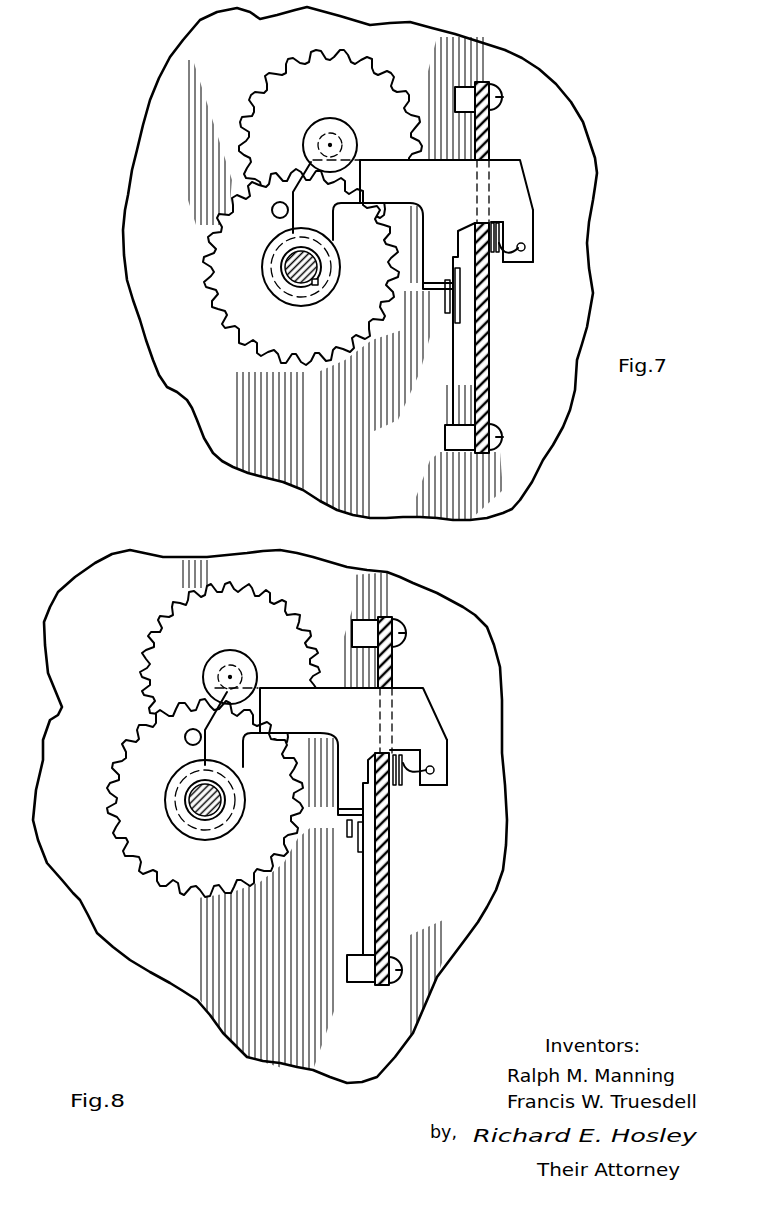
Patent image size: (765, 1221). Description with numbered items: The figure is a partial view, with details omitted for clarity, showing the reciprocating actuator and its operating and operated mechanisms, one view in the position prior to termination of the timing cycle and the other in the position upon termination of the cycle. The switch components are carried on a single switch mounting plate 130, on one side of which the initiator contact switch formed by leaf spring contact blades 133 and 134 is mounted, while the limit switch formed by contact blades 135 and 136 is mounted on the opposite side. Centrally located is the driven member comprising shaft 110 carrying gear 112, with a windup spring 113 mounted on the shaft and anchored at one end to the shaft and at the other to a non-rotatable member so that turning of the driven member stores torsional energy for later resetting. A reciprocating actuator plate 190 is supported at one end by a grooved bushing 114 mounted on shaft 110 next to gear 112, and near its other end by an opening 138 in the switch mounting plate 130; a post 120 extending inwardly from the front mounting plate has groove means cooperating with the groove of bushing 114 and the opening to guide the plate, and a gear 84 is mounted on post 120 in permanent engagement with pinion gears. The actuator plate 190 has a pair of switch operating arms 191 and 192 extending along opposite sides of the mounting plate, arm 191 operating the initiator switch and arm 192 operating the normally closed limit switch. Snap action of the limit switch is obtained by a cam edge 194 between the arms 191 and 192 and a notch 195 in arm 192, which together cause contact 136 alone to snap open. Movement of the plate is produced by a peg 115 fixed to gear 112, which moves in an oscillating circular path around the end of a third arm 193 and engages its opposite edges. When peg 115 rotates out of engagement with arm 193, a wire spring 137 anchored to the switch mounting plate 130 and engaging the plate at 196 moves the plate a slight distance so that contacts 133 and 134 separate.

In FIG. 7, the gear 84 is at (328, 72).
In FIG. 7, the shaft 110 is at (290, 268).
In FIG. 7, the gear 112 is at (213, 292).
In FIG. 8, the gear 112 is at (127, 780).
In FIG. 7, the windup spring 113 is at (311, 294).
In FIG. 7, the grooved bushing 114 is at (288, 292).
In FIG. 7, the peg 115 is at (271, 209).
In FIG. 8, the peg 115 is at (187, 743).
In FIG. 7, the post 120 is at (325, 140).
In FIG. 8, the post 120 is at (225, 676).
In FIG. 7, the switch mounting plate 130 is at (492, 88).
In FIG. 8, the switch mounting plate 130 is at (393, 622).
In FIG. 7, the leaf spring contact blade 133 is at (493, 253).
In FIG. 7, the leaf spring contact blade 134 is at (498, 253).
In FIG. 7, the contact blade 135 is at (461, 287).
In FIG. 8, the contact blade 135 is at (364, 832).
In FIG. 7, the contact blade 136 is at (451, 313).
In FIG. 8, the contact blade 136 is at (350, 845).
In FIG. 7, the wire spring 137 is at (517, 243).
In FIG. 8, the wire spring 137 is at (420, 782).
In FIG. 7, the opening 138 is at (488, 158).
In FIG. 7, the reciprocating actuator plate 190 is at (410, 191).
In FIG. 7, the switch operating arm 191 is at (513, 202).
In FIG. 8, the switch operating arm 191 is at (437, 752).
In FIG. 7, the switch operating arm 192 is at (433, 290).
In FIG. 8, the switch operating arm 192 is at (350, 797).
In FIG. 7, the third arm 193 is at (305, 222).
In FIG. 8, the third arm 193 is at (233, 752).
In FIG. 7, the cam edge 194 is at (466, 230).
In FIG. 8, the cam edge 194 is at (382, 752).
In FIG. 7, the notch 195 is at (423, 289).
In FIG. 7, the spring engagement point 196 is at (525, 248).
In FIG. 8, the spring engagement point 196 is at (434, 770).